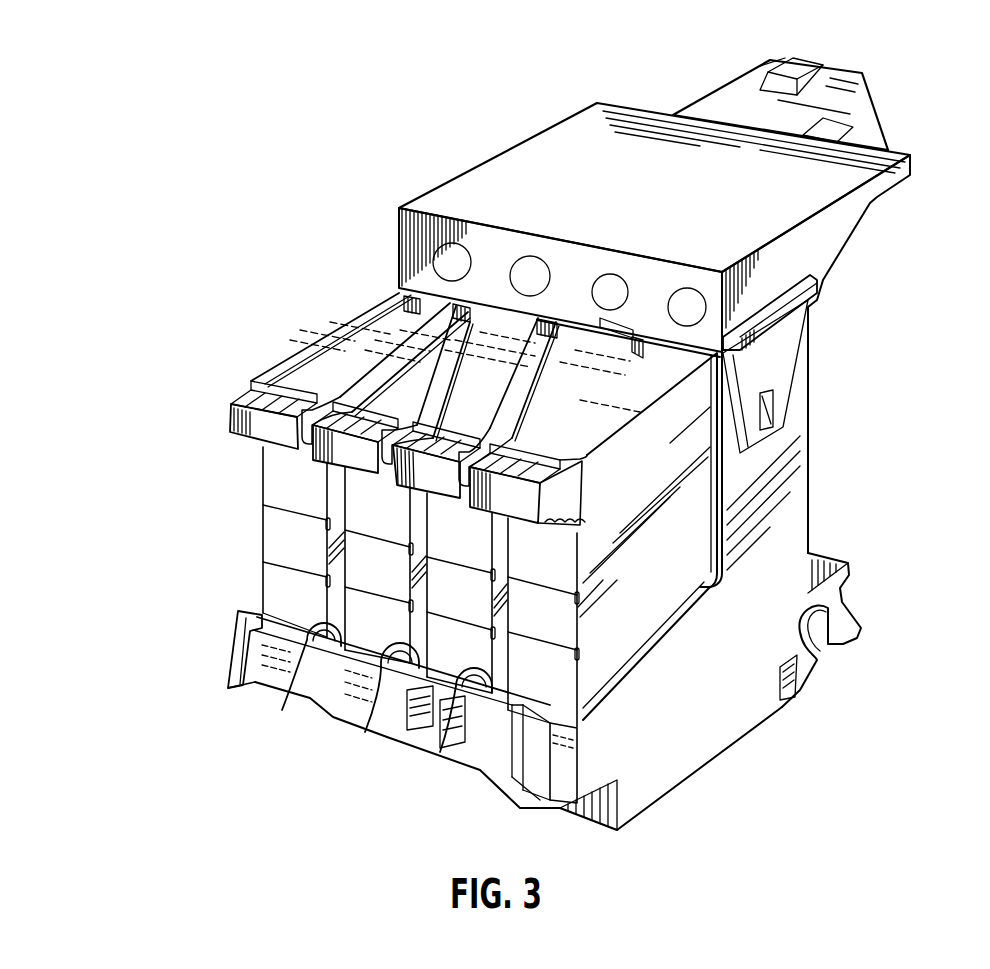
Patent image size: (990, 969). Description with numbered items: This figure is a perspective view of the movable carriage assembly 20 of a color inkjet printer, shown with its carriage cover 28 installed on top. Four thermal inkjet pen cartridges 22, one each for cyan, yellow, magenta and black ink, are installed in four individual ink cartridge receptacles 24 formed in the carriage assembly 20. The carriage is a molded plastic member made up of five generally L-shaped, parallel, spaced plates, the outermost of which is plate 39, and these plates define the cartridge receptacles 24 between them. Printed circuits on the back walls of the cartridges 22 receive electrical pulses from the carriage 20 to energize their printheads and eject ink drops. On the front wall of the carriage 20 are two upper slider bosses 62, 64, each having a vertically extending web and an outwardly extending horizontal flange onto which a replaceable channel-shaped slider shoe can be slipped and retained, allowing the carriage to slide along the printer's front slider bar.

The carriage assembly 20 is at (846, 464).
The inkjet pen cartridge 22 is at (325, 367).
The ink cartridge receptacle 24 is at (259, 606).
The carriage cover 28 is at (820, 240).
The L-shaped plate 39 is at (710, 707).
The upper slider boss 62 is at (432, 718).
The upper slider boss 64 is at (468, 695).